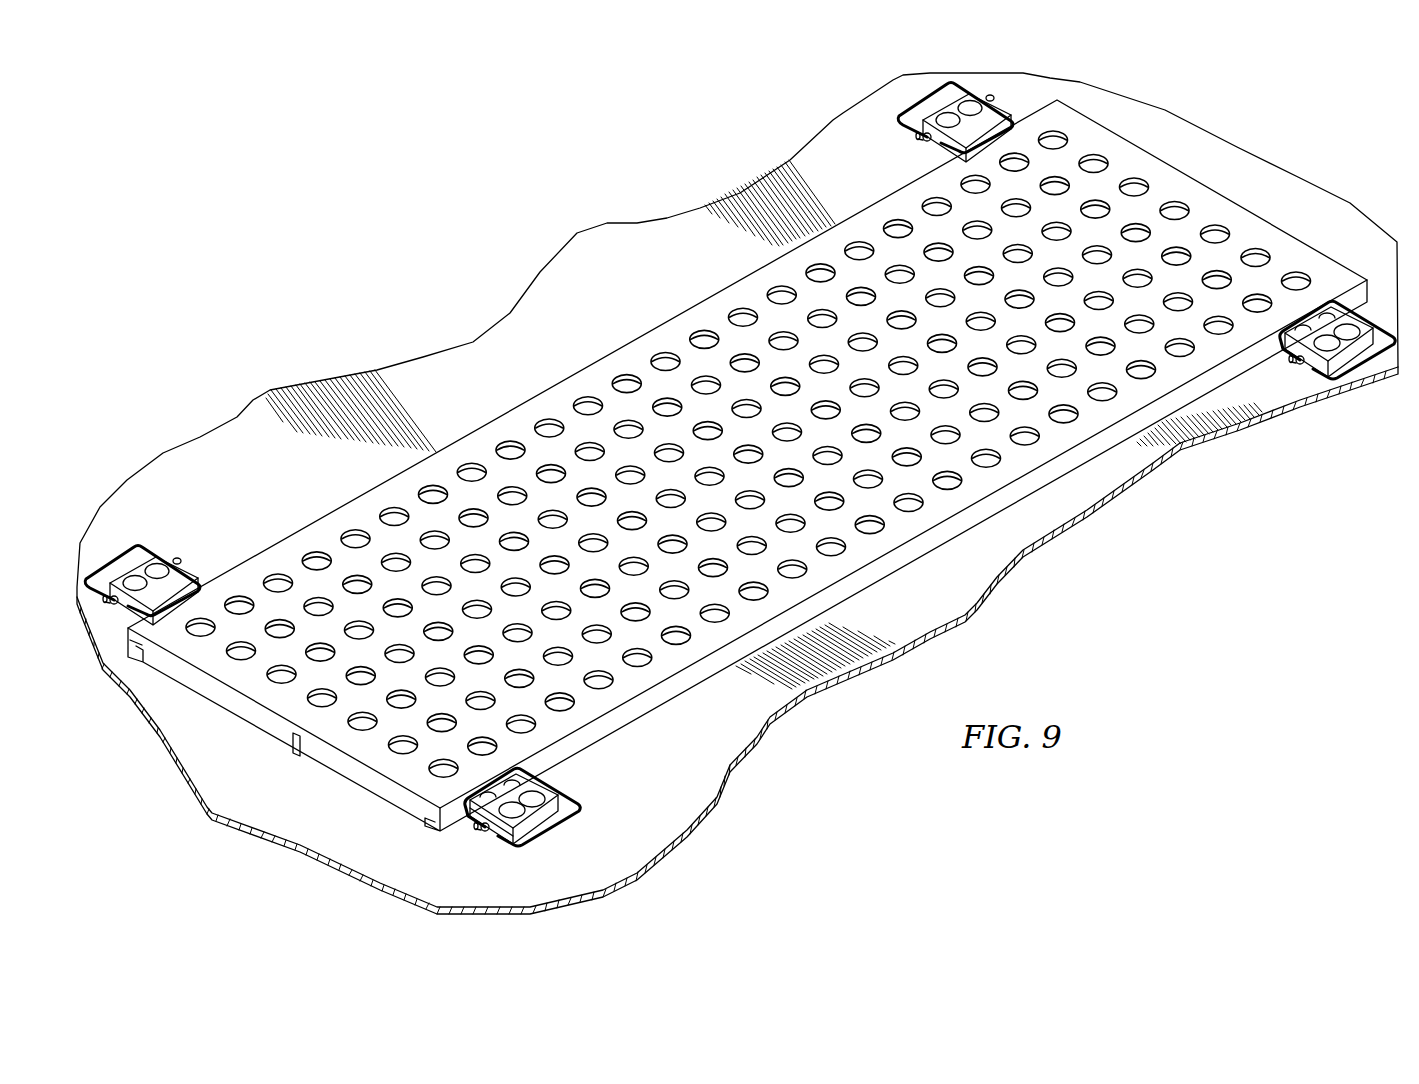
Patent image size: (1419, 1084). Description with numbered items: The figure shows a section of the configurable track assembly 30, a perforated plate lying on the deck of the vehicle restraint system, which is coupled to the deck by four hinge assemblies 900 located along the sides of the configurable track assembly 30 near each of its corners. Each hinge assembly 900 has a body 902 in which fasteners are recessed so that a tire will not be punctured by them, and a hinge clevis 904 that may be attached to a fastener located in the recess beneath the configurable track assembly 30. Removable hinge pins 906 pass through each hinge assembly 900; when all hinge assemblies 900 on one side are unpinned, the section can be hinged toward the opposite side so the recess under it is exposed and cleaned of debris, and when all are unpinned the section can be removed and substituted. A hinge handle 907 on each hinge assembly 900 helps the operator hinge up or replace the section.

The configurable track assembly 30 is at (639, 356).
The hinge assembly 900 is at (542, 825).
The body 902 is at (533, 832).
The hinge clevis 904 is at (473, 812).
The hinge pin 906 is at (485, 830).
The hinge handle 907 is at (563, 825).